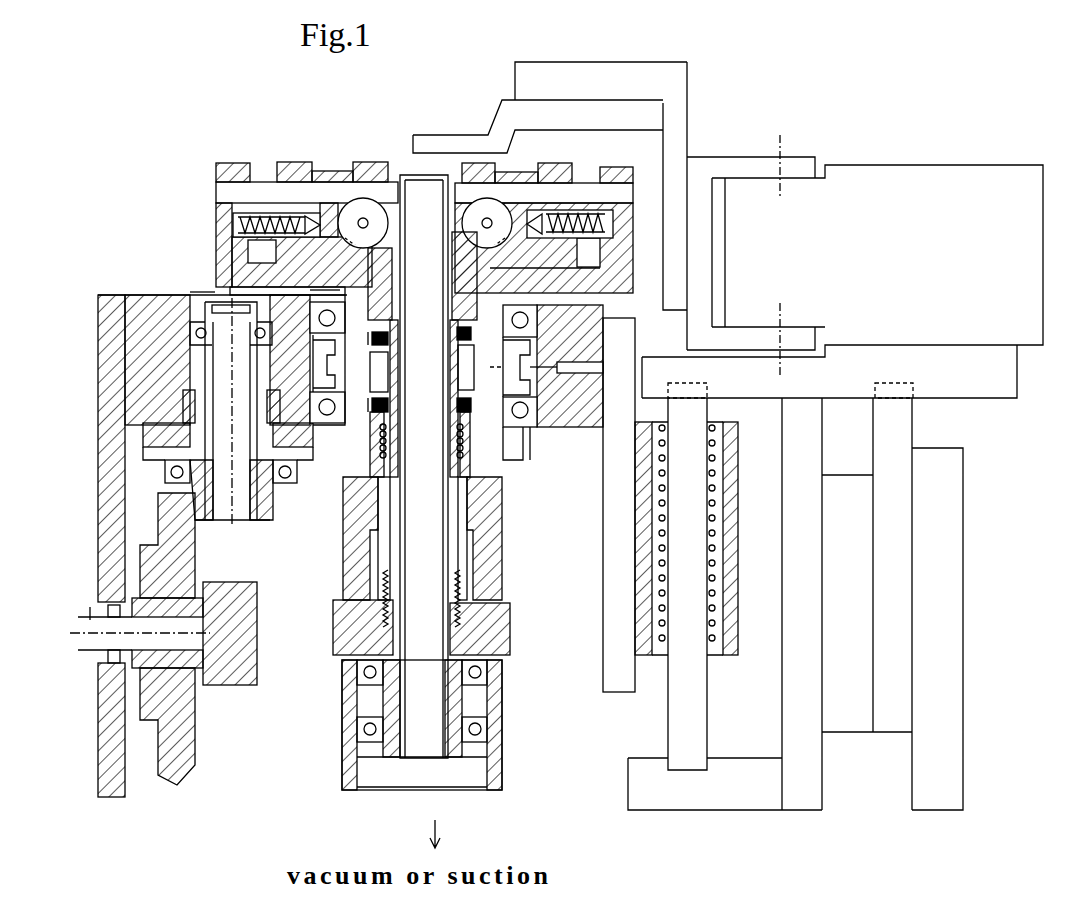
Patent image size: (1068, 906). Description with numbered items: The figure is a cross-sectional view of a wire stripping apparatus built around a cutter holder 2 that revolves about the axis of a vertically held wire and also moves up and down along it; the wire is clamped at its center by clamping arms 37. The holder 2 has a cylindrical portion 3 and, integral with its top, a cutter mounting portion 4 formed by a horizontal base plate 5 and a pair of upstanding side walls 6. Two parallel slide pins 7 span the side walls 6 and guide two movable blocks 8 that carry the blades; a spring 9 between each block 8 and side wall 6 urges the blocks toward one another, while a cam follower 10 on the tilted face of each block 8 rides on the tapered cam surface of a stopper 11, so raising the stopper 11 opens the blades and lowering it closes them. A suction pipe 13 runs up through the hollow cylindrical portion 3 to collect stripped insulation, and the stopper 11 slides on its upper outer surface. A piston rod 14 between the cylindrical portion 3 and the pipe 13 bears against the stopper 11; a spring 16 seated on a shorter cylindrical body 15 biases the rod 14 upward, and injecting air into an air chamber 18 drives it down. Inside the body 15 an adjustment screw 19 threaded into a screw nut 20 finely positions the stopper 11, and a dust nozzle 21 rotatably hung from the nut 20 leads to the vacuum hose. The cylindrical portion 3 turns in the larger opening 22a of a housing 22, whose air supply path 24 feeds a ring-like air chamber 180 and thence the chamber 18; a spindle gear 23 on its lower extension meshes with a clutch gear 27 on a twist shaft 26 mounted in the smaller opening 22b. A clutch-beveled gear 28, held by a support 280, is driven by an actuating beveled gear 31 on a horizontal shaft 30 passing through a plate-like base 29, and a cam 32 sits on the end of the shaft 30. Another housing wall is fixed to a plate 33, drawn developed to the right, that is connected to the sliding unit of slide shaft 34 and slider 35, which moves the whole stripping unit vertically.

The cutter holder 2 is at (457, 210).
The cylindrical portion 3 is at (510, 468).
The cutter mounting portion 4 is at (377, 184).
The horizontal base plate 5 is at (248, 278).
The side wall 6 is at (232, 163).
The slide pin 7 is at (262, 185).
The movable block 8 is at (372, 175).
The spring 9 is at (232, 225).
The cam follower 10 is at (344, 205).
The stopper 11 is at (460, 270).
The suction pipe 13 is at (470, 515).
The piston rod 14 is at (375, 440).
The cylindrical body 15 is at (352, 568).
The spring 16 is at (367, 418).
The air chamber 18 is at (590, 302).
The adjustment screw 19 is at (465, 550).
The screw nut 20 is at (510, 635).
The dust nozzle 21 is at (495, 700).
The housing 22 is at (160, 298).
The larger opening 22a is at (322, 293).
The smaller opening 22b is at (203, 292).
The spindle gear 23 is at (525, 438).
The air supply path 24 is at (603, 370).
The twist shaft 26 is at (212, 368).
The clutch gear 27 is at (205, 395).
The clutch-beveled gear 28 is at (177, 490).
The plate-like base 29 is at (85, 300).
The horizontally extending shaft 30 is at (90, 606).
The actuating beveled gear 31 is at (190, 748).
The cam 32 is at (252, 647).
The plate 33 is at (617, 692).
The slide shaft 34 is at (690, 713).
The slider 35 is at (640, 500).
The clamping arm 37 is at (450, 120).
The ring-like air chamber 180 is at (537, 347).
The support 280 is at (145, 436).